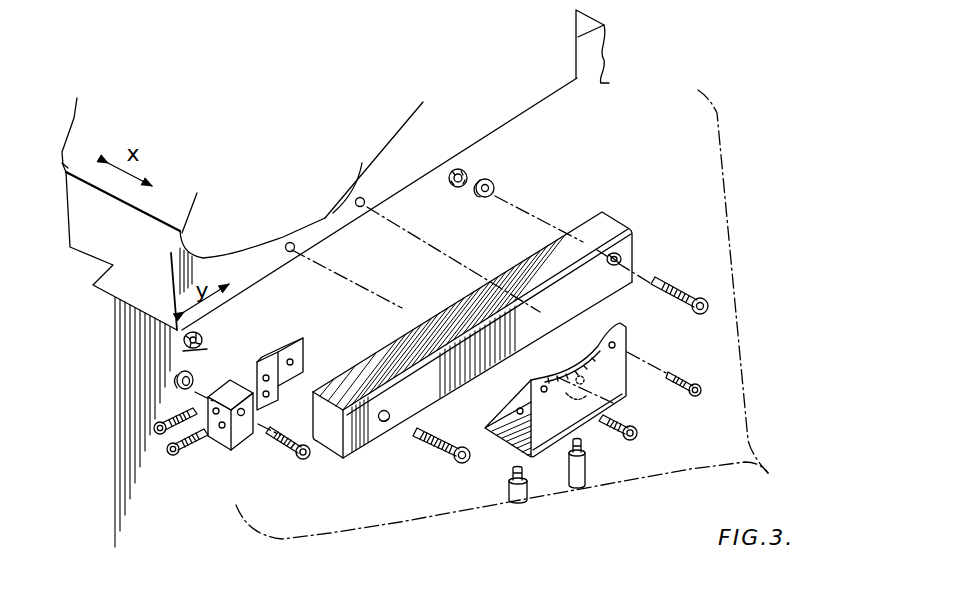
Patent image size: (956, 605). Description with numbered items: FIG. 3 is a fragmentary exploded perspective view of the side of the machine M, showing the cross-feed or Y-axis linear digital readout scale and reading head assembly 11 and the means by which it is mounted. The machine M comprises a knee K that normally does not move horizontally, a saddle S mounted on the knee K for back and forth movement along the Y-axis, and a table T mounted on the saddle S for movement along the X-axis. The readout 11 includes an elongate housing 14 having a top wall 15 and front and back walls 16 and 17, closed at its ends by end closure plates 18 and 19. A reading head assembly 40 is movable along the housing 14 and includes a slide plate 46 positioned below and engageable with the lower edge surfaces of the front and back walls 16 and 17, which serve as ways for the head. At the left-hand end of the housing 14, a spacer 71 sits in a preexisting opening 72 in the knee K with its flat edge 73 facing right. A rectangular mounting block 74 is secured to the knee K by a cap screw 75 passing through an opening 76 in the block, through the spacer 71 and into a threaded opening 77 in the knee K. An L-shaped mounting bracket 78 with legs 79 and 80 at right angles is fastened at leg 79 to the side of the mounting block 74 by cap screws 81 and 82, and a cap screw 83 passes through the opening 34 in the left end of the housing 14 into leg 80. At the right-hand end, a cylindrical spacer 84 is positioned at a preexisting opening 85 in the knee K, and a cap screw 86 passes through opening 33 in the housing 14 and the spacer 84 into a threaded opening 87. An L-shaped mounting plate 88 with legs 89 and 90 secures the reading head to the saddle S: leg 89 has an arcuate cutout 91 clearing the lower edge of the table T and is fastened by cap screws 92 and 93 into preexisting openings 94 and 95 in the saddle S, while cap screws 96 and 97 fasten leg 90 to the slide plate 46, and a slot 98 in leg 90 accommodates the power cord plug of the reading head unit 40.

The linear digital readout scale and reading head assembly 11 is at (752, 296).
The housing 14 is at (502, 331).
The top wall 15 is at (592, 226).
The front wall 16 is at (366, 442).
The back wall 17 is at (318, 392).
The end closure plate 18 is at (630, 236).
The end closure plate 19 is at (343, 450).
The opening 33 is at (623, 259).
The opening 34 is at (390, 410).
The reading head assembly 40 is at (458, 386).
The slide plate 46 is at (503, 365).
The spacer 71 is at (181, 388).
The preexisting opening 72 is at (205, 333).
The flat edge 73 is at (200, 365).
The mounting block 74 is at (231, 440).
The cap screw 75 is at (290, 446).
The opening 76 is at (241, 417).
The threaded opening 77 is at (182, 340).
The mounting bracket 78 is at (272, 352).
The leg 79 is at (272, 400).
The leg 80 is at (300, 342).
The cap screw 81 is at (158, 432).
The cap screw 82 is at (173, 457).
The cap screw 83 is at (446, 457).
The spacer 84 is at (495, 184).
The preexisting opening 85 is at (470, 172).
The cap screw 86 is at (696, 292).
The threaded opening 87 is at (453, 190).
The mounting plate 88 is at (628, 404).
The leg 89 is at (633, 344).
The leg 90 is at (500, 440).
The arcuately shaped cutout portion 91 is at (590, 338).
The cap screw 92 is at (618, 438).
The cap screw 93 is at (694, 398).
The preexisting opening 94 is at (295, 248).
The preexisting opening 95 is at (365, 203).
The cap screw 96 is at (522, 500).
The cap screw 97 is at (584, 478).
The slot 98 is at (577, 393).
The machine M is at (611, 45).
The knee K is at (606, 82).
The saddle S is at (549, 100).
The table T is at (410, 134).